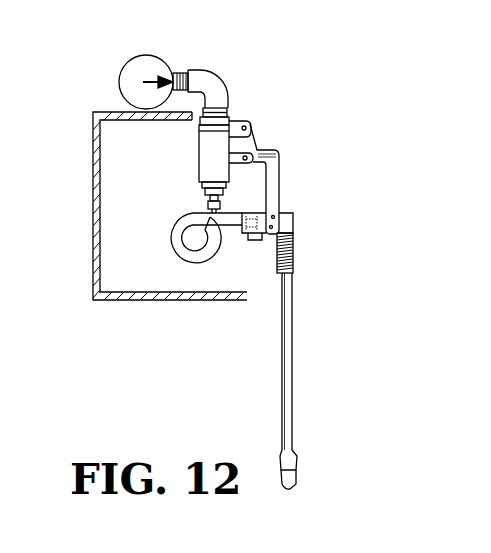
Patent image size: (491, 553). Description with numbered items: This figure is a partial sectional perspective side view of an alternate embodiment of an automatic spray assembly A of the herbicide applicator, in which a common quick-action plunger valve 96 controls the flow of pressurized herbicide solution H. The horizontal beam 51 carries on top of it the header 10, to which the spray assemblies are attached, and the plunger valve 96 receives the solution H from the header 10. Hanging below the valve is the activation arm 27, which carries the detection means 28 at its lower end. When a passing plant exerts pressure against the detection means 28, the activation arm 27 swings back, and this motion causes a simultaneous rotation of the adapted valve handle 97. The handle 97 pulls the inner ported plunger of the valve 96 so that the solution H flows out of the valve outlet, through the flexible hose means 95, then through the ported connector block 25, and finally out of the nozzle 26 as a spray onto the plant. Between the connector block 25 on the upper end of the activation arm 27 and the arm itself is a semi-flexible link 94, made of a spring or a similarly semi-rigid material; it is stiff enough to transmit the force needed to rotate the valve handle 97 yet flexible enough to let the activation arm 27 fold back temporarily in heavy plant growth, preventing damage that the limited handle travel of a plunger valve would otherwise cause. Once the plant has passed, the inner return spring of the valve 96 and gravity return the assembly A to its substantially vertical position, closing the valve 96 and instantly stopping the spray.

The header 10 is at (160, 55).
The quick-action plunger valve 96 is at (238, 121).
The valve handle 97 is at (280, 157).
The ported connector block 25 is at (293, 215).
The nozzle 26 is at (262, 243).
The flexible hose means 95 is at (173, 232).
The semi-flexible link 94 is at (294, 261).
The activation arm 27 is at (294, 376).
The detection means 28 is at (297, 481).
The horizontal beam 51 is at (93, 291).
The automatic spray assembly A is at (322, 176).